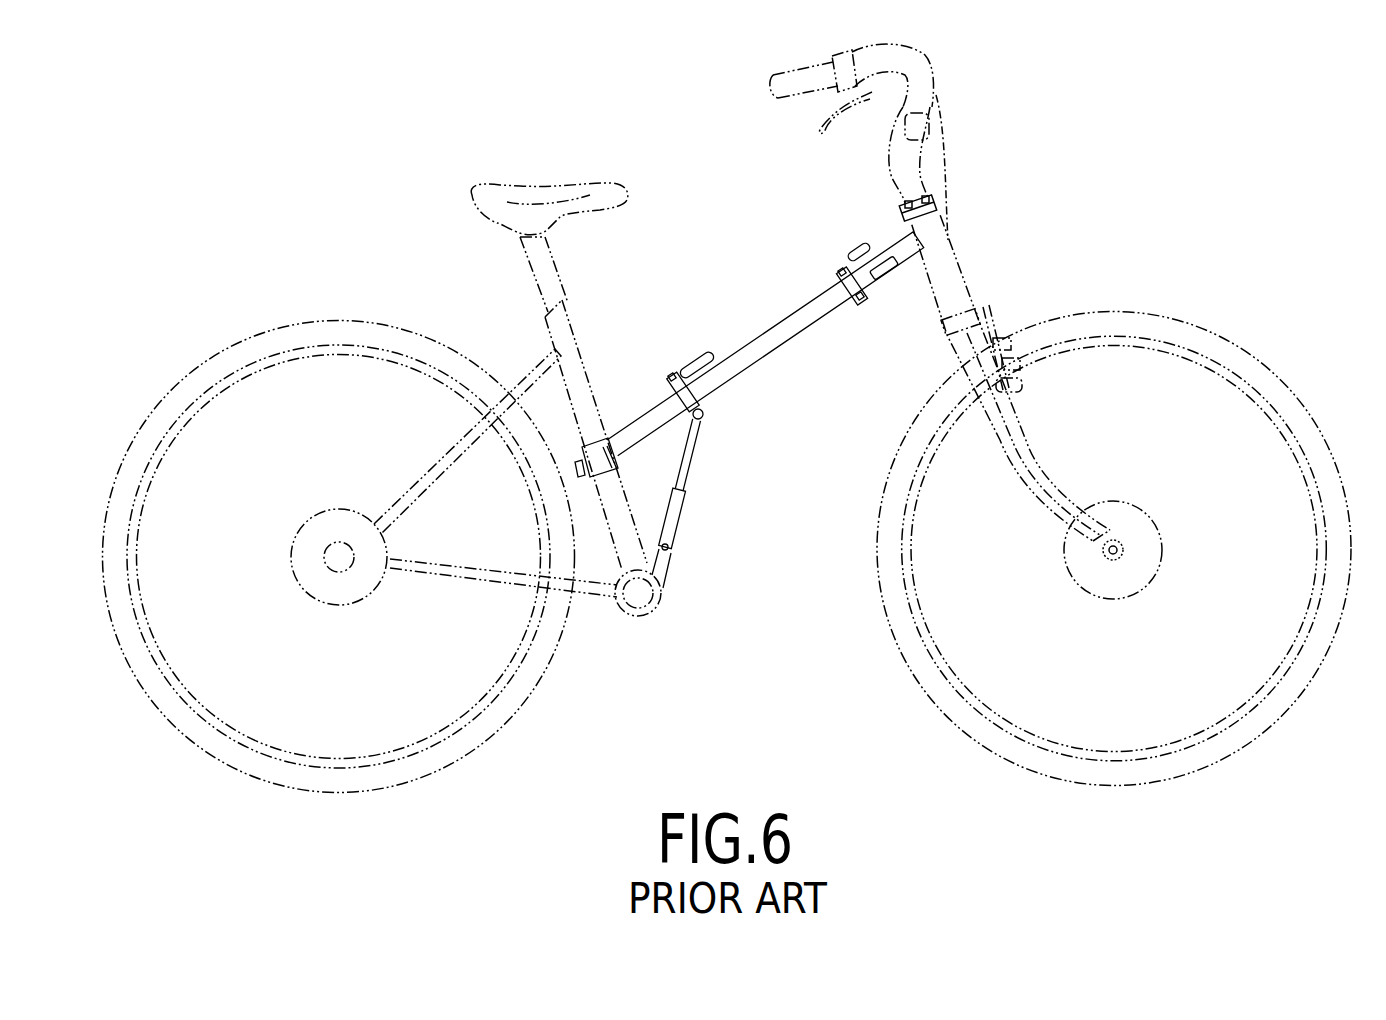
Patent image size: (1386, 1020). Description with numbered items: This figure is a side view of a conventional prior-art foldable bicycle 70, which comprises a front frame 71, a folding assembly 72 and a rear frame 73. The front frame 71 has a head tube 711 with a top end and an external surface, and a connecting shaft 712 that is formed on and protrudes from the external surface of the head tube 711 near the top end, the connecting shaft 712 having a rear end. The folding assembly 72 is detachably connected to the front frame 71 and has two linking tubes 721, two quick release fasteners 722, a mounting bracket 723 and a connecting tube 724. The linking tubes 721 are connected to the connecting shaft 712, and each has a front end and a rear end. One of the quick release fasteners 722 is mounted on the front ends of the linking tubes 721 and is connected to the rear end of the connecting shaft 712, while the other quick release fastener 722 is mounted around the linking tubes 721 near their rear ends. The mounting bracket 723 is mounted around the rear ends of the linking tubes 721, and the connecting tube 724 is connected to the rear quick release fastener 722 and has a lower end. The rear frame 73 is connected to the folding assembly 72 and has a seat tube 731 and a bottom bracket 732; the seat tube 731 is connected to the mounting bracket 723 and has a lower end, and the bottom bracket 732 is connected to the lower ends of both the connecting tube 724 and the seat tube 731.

The foldable bicycle 70 is at (702, 160).
The front frame 71 is at (971, 361).
The head tube 711 is at (960, 290).
The connecting shaft 712 is at (893, 247).
The folding assembly 72 is at (752, 398).
The linking tubes 721 is at (762, 344).
The quick release fasteners 722 is at (692, 402).
The mounting bracket 723 is at (603, 455).
The connecting tube 724 is at (677, 512).
The rear frame 73 is at (604, 434).
The seat tube 731 is at (548, 317).
The bottom bracket 732 is at (648, 597).